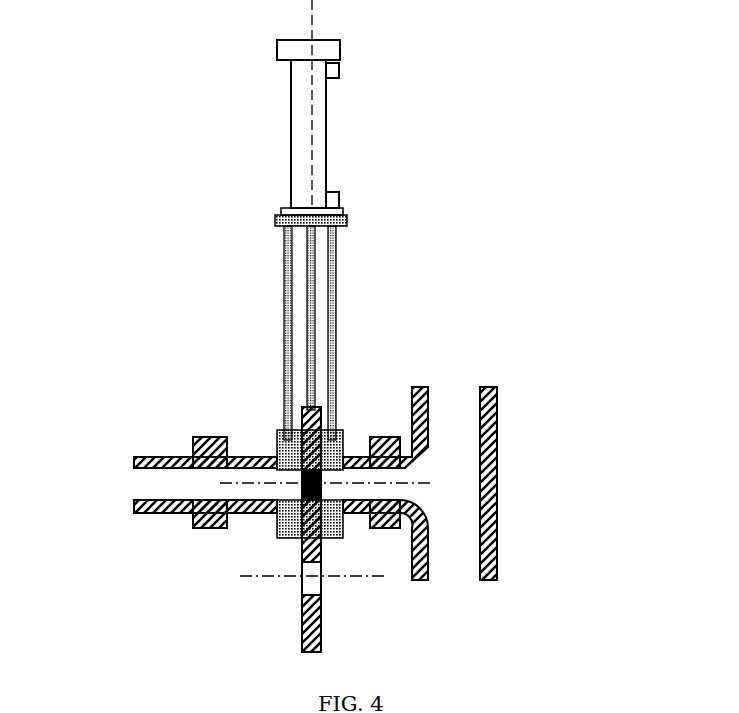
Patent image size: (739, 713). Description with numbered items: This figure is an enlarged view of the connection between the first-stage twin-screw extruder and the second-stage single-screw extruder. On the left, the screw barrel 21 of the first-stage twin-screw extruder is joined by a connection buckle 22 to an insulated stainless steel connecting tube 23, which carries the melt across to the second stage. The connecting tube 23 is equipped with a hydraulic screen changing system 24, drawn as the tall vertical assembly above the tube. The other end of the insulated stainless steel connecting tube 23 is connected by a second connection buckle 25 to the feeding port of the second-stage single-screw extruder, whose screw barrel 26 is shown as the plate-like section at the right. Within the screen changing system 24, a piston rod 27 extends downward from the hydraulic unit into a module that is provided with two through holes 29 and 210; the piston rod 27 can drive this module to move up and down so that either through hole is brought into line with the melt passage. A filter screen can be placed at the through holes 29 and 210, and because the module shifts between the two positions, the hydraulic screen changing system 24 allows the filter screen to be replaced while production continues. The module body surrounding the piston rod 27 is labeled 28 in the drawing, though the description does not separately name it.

The screw barrel 21 is at (133, 460).
The connection buckle 22 is at (195, 528).
The insulated stainless steel connecting tube 23 is at (247, 457).
The hydraulic screen changing system 24 is at (333, 155).
The connection buckle 25 is at (395, 527).
The second-stage single-screw extruder screw barrel 26 is at (497, 458).
The piston rod 27 is at (313, 325).
The valve body block 28 is at (340, 445).
The through hole 29 is at (300, 490).
The through hole 210 is at (302, 577).